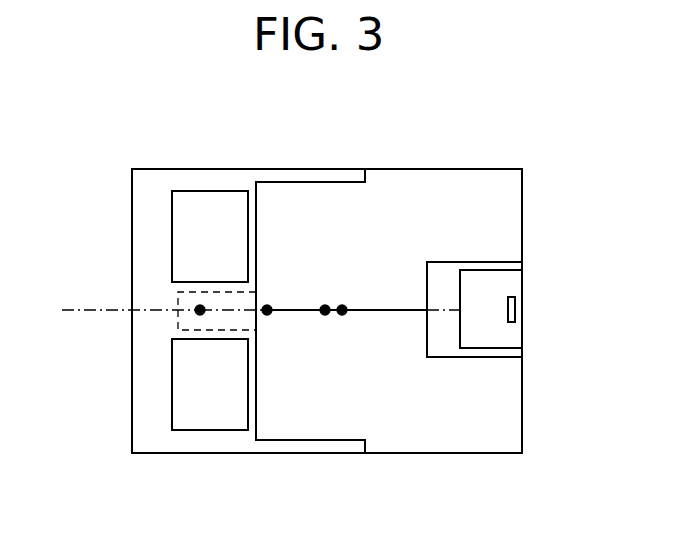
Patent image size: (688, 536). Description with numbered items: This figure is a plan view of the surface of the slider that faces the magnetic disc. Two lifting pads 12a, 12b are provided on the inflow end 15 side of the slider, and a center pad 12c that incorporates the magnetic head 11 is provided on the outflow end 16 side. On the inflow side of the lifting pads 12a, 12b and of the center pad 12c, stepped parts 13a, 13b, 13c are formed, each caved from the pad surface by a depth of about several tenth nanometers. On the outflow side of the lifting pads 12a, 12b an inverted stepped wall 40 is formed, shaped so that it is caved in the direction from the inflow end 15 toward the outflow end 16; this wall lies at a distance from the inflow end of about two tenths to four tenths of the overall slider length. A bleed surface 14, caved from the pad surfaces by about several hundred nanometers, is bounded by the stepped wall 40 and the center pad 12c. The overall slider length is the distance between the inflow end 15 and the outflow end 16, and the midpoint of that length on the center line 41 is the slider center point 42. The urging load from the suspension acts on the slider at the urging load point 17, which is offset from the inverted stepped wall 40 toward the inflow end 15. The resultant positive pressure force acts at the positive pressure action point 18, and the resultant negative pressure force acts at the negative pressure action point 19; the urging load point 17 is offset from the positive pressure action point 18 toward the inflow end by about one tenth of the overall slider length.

The magnetic head 11 is at (515, 305).
The lifting pad 12a is at (213, 212).
The lifting pad 12b is at (210, 413).
The center pad 12c is at (500, 283).
The stepped part 13a is at (142, 230).
The stepped part 13b is at (143, 395).
The stepped part 13c is at (444, 340).
The bleed surface 14 is at (483, 210).
The inflow end 15 is at (130, 427).
The outflow end 16 is at (522, 333).
The urging load point 17 is at (197, 311).
The positive pressure action point 18 is at (268, 308).
The negative pressure action point 19 is at (344, 308).
The inverted stepped wall 40 is at (258, 372).
The center line 41 is at (97, 308).
The slider center point 42 is at (328, 313).